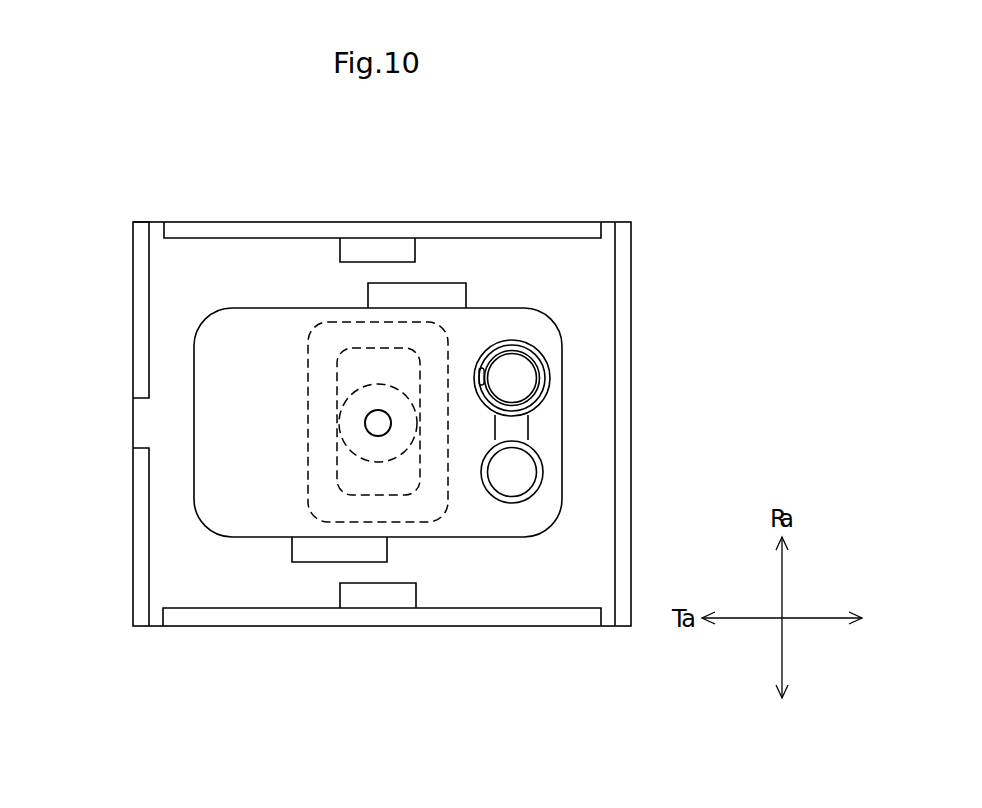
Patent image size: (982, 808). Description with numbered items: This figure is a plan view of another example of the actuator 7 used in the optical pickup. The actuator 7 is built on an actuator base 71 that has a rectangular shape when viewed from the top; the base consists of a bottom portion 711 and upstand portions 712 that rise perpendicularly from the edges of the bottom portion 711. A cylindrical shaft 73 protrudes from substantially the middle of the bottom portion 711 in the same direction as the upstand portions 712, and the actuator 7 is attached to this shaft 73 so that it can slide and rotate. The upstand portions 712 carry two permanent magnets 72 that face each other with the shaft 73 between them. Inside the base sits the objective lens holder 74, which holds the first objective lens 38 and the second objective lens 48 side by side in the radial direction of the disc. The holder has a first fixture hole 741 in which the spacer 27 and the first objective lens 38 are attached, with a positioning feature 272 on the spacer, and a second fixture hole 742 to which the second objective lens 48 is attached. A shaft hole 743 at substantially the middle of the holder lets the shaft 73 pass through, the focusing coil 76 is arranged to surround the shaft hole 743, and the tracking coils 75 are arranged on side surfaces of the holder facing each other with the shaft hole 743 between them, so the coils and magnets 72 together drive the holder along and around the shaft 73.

The actuator 7 is at (160, 152).
The actuator base 71 is at (178, 292).
The bottom portion 711 is at (177, 340).
The upstand portions 712 is at (226, 223).
The permanent magnets 72 is at (380, 248).
The tracking coils 75 is at (428, 286).
The objective lens holder 74 is at (228, 489).
The shaft 73 is at (365, 423).
The shaft hole 743 is at (385, 428).
The focusing coil 76 is at (418, 515).
The first fixture hole 741 is at (518, 344).
The spacer 27 is at (541, 362).
The first objective lens 38 is at (515, 383).
The positioning portion 272 is at (485, 364).
The second fixture hole 742 is at (533, 477).
The second objective lens 48 is at (518, 462).